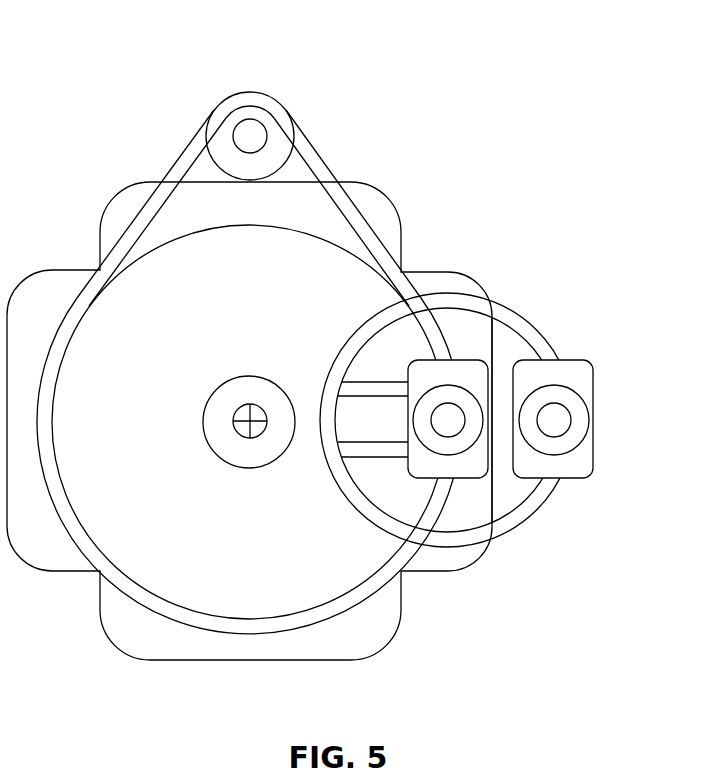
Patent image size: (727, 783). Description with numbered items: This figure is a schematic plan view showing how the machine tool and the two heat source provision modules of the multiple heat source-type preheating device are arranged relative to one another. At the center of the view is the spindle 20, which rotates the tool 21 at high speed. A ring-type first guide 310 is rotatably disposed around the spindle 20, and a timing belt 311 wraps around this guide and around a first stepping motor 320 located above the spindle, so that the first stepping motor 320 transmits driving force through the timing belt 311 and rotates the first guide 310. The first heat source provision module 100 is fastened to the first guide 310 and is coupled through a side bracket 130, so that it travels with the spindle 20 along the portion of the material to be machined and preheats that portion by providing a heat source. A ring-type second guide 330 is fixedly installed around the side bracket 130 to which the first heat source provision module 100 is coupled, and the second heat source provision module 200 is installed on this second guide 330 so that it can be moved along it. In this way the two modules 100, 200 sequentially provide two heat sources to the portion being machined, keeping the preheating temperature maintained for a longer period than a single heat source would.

The spindle 20 is at (362, 186).
The tool 21 is at (253, 425).
The first heat source provision module 100 is at (496, 443).
The side bracket 130 is at (465, 368).
The second heat source provision module 200 is at (555, 426).
The first guide 310 is at (150, 562).
The timing belt 311 is at (190, 167).
The first stepping motor 320 is at (250, 92).
The second guide 330 is at (543, 342).